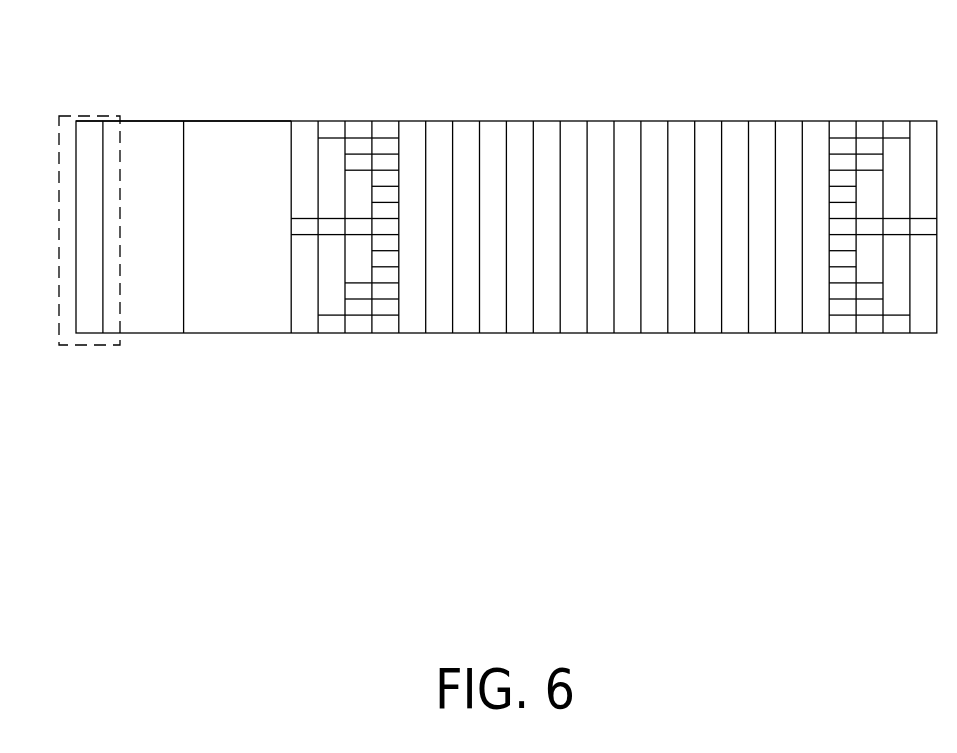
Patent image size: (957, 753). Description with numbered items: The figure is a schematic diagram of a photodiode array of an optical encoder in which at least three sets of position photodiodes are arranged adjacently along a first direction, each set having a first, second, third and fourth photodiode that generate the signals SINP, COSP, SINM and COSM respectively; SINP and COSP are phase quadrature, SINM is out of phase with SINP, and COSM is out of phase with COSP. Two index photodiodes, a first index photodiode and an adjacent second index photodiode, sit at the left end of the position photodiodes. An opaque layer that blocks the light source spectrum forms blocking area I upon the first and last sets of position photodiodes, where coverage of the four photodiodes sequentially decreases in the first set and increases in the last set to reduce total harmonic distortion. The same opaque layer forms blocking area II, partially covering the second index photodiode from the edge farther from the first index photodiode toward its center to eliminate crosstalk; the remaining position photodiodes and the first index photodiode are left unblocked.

The first photodiode output signal SINP is at (302, 106).
The second photodiode output signal COSP is at (333, 106).
The third photodiode output signal SINM is at (364, 108).
The fourth photodiode output signal COSM is at (392, 109).
The element blocking area I is at (370, 187).
The element blocking area II is at (93, 259).